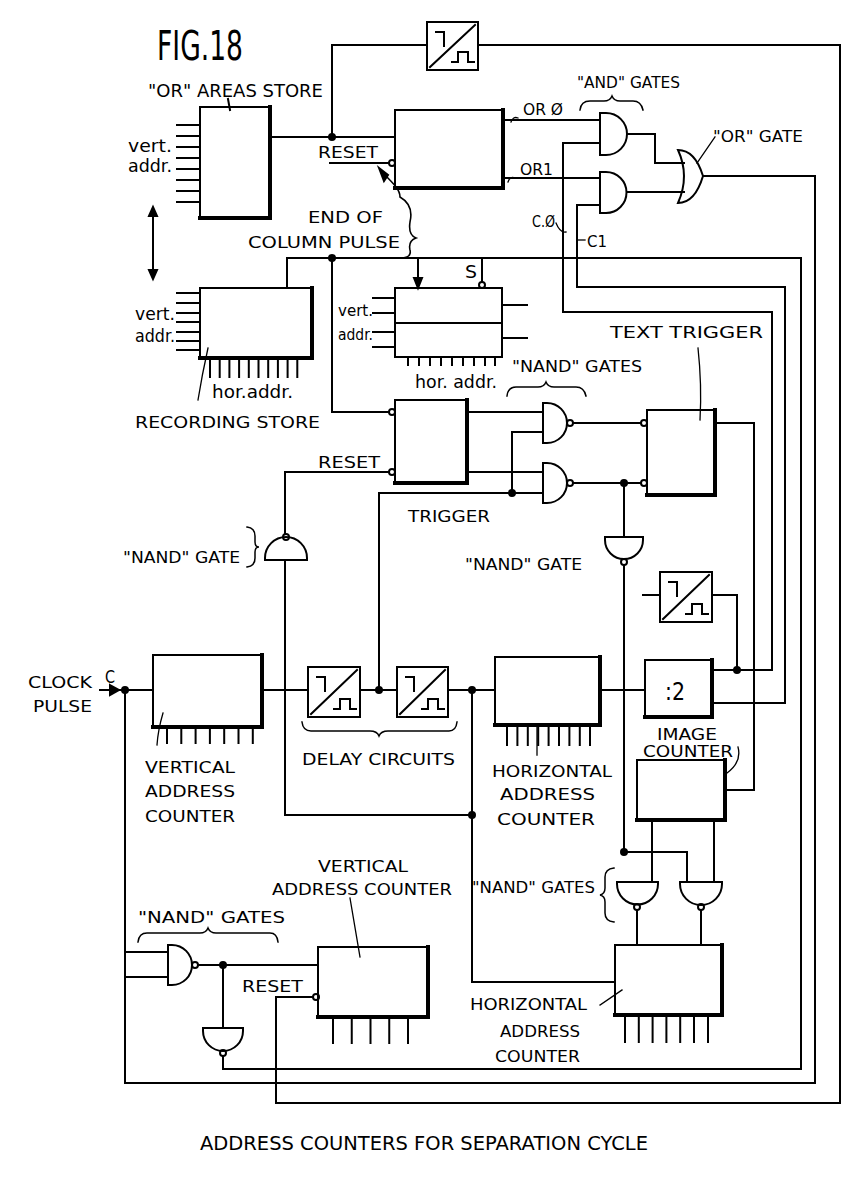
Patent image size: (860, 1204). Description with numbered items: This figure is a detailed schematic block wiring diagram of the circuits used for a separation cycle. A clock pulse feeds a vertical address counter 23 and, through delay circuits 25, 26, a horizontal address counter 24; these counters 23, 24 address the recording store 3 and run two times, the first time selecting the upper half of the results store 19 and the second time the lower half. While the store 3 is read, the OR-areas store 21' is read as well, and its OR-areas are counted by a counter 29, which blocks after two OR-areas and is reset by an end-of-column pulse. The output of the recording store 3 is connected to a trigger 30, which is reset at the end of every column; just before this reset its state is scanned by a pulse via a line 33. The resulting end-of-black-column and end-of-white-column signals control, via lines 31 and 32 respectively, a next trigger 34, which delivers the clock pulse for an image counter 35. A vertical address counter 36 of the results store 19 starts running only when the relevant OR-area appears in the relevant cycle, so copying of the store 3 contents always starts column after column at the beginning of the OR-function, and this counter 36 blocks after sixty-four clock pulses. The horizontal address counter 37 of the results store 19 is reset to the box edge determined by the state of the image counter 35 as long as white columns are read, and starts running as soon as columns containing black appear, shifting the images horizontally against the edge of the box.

The OR-areas store 21' is at (238, 162).
The store 3 is at (255, 300).
The counter 29 is at (482, 127).
The results store 19 is at (445, 293).
The trigger 30 is at (413, 442).
The line 31 is at (588, 423).
The line 32 is at (584, 483).
The line 33 is at (385, 555).
The trigger 34 is at (680, 425).
The vertical address counter 23 is at (203, 670).
The delay circuit 25 is at (330, 667).
The delay circuit 26 is at (423, 667).
The horizontal address counter 24 is at (533, 668).
The image counter 35 is at (707, 805).
The vertical address counter 36 is at (382, 958).
The horizontal address counter 37 is at (712, 965).